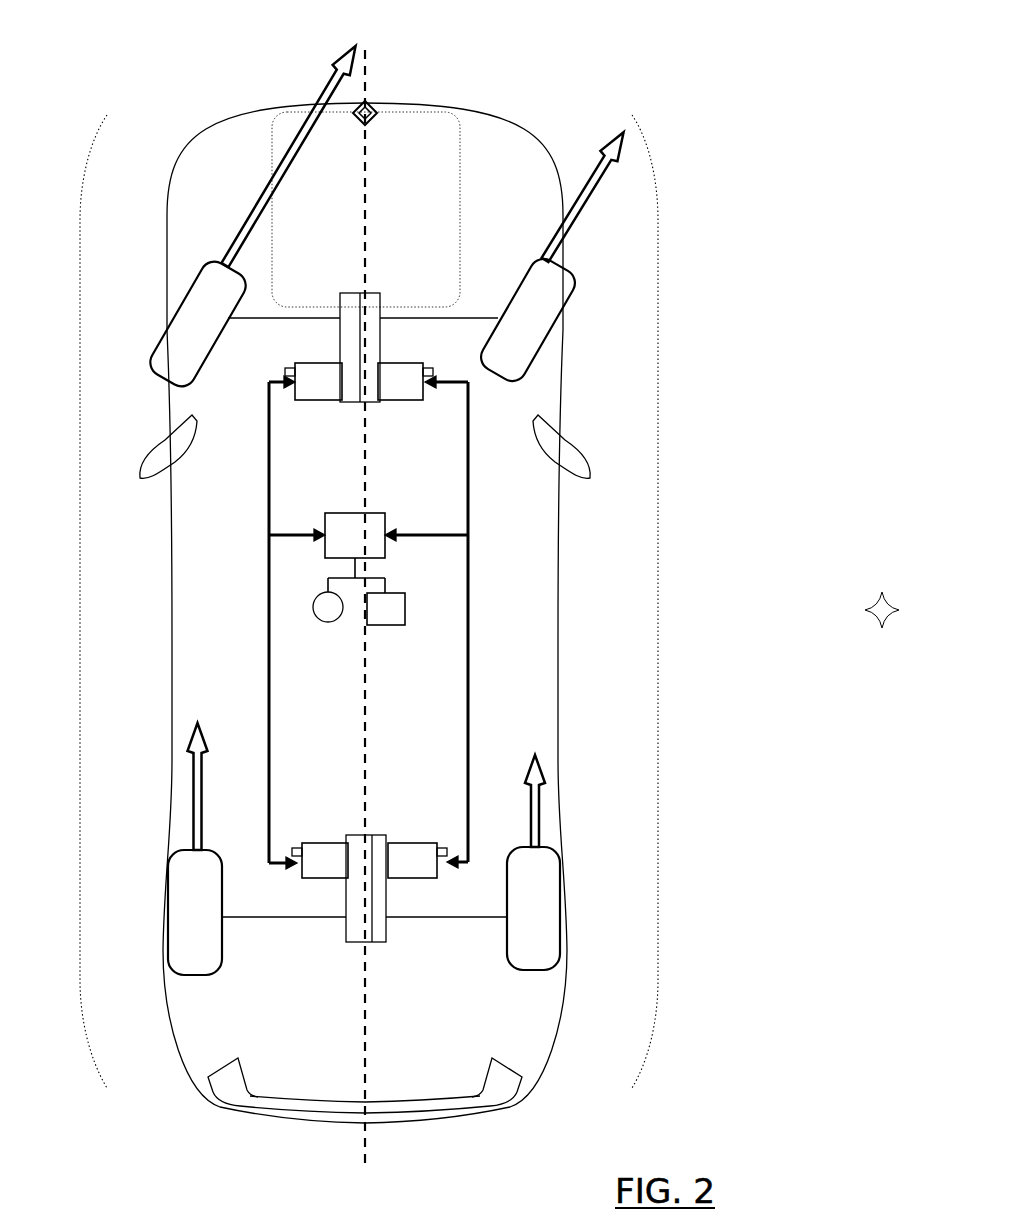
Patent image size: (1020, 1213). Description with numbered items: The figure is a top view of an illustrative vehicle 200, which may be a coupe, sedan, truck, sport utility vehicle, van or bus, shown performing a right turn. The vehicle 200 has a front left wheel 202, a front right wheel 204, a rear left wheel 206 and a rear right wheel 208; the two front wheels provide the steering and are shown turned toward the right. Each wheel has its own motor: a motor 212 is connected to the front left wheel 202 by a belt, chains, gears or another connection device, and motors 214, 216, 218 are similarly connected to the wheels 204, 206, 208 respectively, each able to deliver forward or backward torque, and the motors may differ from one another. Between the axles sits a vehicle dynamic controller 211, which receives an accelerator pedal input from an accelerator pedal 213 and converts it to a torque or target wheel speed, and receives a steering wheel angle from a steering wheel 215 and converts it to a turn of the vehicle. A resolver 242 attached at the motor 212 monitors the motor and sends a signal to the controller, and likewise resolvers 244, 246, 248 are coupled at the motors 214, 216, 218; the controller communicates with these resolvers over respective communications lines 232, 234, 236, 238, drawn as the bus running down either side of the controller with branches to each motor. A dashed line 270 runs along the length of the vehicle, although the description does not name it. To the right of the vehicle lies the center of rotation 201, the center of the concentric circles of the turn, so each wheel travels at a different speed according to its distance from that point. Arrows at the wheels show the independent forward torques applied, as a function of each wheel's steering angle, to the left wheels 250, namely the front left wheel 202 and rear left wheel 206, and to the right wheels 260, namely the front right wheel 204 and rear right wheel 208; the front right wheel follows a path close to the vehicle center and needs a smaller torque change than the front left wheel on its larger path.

The vehicle 200 is at (215, 69).
The center of rotation 201 is at (893, 626).
The front left wheel 202 is at (162, 332).
The front right wheel 204 is at (568, 332).
The rear left wheel 206 is at (162, 938).
The rear right wheel 208 is at (563, 900).
The vehicle dynamic controller 211 is at (385, 557).
The motor 212 is at (318, 402).
The accelerator pedal 213 is at (405, 622).
The motor 214 is at (400, 402).
The steering wheel 215 is at (334, 622).
The motor 216 is at (335, 842).
The motor 218 is at (400, 842).
The communications line 232 is at (268, 482).
The communications line 234 is at (469, 470).
The communications line 236 is at (268, 800).
The communications line 238 is at (469, 780).
The resolver 242 is at (290, 370).
The resolver 244 is at (433, 374).
The resolver 246 is at (292, 848).
The resolver 248 is at (448, 850).
The left wheels 250 is at (80, 602).
The right wheels 260 is at (658, 602).
The vehicle centerline 270 is at (366, 242).